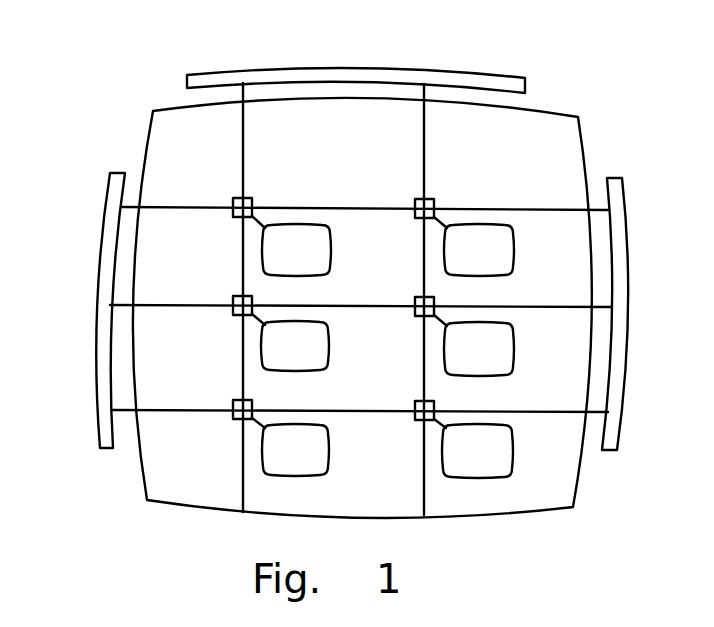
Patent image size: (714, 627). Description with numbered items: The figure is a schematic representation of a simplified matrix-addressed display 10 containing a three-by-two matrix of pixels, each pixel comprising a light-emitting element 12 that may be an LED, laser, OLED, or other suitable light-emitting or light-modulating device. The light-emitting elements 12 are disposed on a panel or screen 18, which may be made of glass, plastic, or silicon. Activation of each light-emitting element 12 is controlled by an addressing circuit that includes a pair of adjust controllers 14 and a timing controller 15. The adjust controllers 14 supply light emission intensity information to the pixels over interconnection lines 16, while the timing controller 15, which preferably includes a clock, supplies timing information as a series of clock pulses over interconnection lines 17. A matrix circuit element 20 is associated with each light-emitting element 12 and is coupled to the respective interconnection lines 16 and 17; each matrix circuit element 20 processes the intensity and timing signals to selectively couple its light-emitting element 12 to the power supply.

The display 10 is at (447, 527).
The light-emitting element 12 is at (328, 258).
The adjust controller 14 is at (97, 425).
The timing controller 15 is at (397, 70).
The interconnection line 16 is at (210, 205).
The interconnection line 17 is at (245, 146).
The panel or screen 18 is at (148, 316).
The matrix circuit element 20 is at (232, 215).